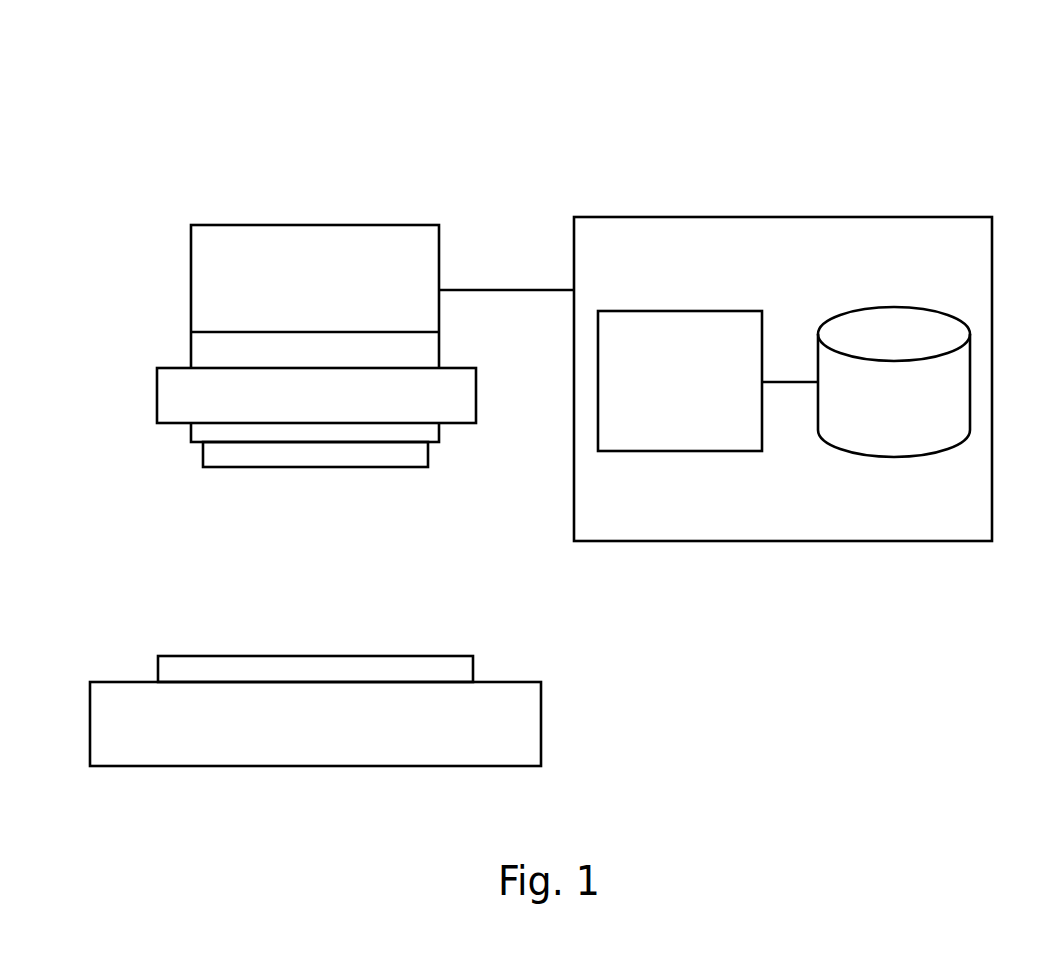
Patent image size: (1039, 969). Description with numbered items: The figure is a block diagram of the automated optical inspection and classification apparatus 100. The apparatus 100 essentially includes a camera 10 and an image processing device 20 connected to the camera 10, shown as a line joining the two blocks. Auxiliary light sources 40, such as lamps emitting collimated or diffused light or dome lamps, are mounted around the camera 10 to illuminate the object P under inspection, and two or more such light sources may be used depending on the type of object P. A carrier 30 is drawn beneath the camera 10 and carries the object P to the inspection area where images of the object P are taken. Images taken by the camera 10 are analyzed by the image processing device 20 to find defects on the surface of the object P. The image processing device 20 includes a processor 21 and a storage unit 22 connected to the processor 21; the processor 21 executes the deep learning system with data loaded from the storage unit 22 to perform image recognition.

The automated optical inspection and classification apparatus 100 is at (1003, 65).
The camera 10 is at (316, 225).
The image processing device 20 is at (700, 217).
The processor 21 is at (660, 311).
The storage unit 22 is at (878, 307).
The carrier 30 is at (332, 766).
The auxiliary light sources 40 is at (156, 389).
The object P is at (233, 656).